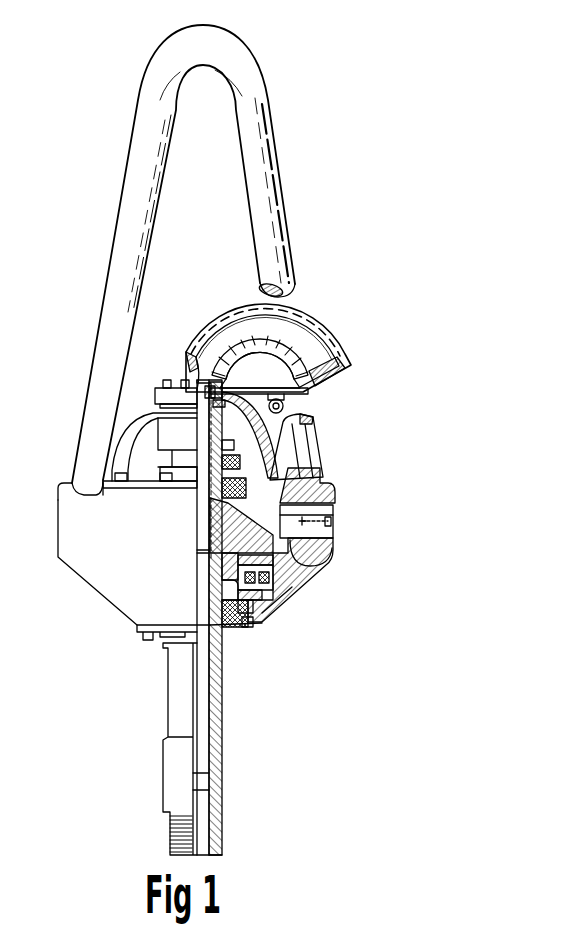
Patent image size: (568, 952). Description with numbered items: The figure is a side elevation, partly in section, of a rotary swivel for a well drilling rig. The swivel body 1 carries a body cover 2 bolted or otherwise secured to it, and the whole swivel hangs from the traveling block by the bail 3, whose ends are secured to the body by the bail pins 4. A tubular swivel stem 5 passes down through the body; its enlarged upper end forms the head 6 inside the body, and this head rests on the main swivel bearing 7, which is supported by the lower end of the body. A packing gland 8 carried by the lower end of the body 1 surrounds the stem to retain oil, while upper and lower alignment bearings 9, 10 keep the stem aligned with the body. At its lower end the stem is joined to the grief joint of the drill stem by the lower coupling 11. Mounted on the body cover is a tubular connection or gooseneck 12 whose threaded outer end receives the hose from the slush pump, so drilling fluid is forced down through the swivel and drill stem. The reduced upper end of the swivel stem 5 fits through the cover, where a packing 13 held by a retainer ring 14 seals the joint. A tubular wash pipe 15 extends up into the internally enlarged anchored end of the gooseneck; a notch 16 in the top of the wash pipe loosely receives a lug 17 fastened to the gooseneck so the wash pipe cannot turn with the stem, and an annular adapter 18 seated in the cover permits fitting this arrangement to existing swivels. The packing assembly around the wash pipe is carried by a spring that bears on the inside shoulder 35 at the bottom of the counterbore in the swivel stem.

The swivel body 1 is at (335, 553).
The body cover 2 is at (258, 462).
The bail 3 is at (106, 285).
The bail pins 4 is at (333, 511).
The tubular swivel stem 5 is at (223, 698).
The head 6 is at (333, 527).
The main swivel bearing 7 is at (268, 618).
The packing gland 8 is at (258, 634).
The upper alignment bearing 9 is at (326, 476).
The lower alignment bearing 10 is at (262, 629).
The lower coupling 11 is at (225, 781).
The tubular connection (gooseneck) 12 is at (311, 333).
The packing 13 is at (286, 482).
The retainer ring 14 is at (275, 470).
The tubular wash pipe 15 is at (212, 448).
The notch 16 is at (206, 366).
The lug 17 is at (196, 382).
The annular adapter 18 is at (233, 404).
The inside shoulder 35 is at (327, 572).